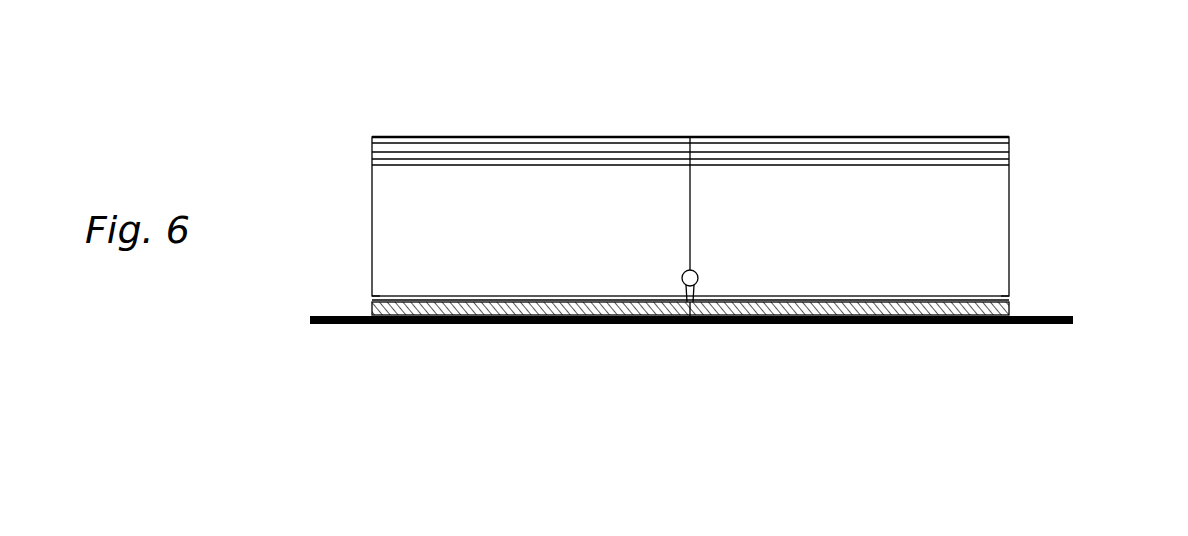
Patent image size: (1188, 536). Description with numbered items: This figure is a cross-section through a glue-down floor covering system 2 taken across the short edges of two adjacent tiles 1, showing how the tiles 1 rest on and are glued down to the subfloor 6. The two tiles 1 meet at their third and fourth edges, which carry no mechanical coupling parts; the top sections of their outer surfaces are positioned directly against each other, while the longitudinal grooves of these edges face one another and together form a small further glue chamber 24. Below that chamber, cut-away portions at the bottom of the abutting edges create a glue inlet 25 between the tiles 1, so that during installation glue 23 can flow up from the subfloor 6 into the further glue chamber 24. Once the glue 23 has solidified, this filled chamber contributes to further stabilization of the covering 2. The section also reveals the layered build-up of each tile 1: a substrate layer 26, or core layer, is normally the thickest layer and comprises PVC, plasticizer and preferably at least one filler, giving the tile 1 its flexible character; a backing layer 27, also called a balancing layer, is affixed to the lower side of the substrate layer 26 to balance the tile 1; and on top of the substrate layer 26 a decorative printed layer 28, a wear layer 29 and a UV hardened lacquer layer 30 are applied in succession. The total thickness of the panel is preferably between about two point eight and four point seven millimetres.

The glue-down tile 1 is at (552, 126).
The glue-down floor covering system 2 is at (467, 103).
The subfloor 6 is at (1018, 326).
The solidified glue 23 is at (843, 326).
The further glue chamber 24 is at (698, 272).
The glue inlet 25 is at (692, 326).
The substrate layer 26 is at (517, 231).
The backing layer 27 is at (373, 296).
The decorative printed layer 28 is at (373, 158).
The wear layer 29 is at (373, 149).
The UV hardened lacquer layer 30 is at (383, 137).